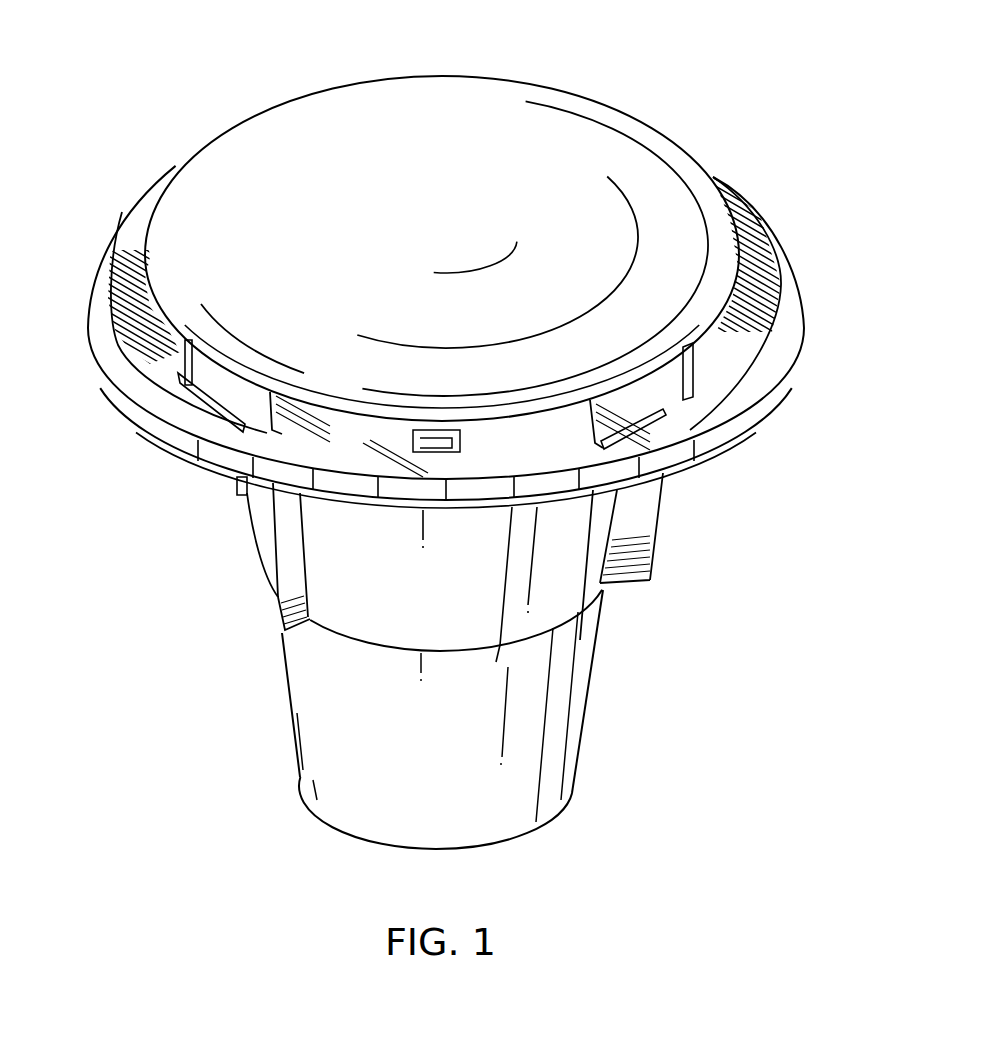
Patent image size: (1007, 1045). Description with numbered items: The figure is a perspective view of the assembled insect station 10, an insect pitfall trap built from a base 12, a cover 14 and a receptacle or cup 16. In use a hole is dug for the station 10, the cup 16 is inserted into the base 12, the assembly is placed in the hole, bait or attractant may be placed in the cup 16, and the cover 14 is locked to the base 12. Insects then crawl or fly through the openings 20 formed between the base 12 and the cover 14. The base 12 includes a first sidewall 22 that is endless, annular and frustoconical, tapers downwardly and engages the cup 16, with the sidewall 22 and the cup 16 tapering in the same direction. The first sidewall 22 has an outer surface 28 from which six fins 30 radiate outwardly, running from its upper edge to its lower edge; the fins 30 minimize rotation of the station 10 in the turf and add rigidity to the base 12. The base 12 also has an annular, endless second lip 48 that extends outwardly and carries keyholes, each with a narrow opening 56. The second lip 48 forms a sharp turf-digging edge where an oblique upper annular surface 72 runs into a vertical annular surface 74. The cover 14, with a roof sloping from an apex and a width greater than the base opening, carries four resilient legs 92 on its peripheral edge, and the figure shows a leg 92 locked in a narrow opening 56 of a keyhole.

The insect station 10 is at (619, 82).
The base 12 is at (620, 585).
The cover 14 is at (606, 249).
The cup 16 is at (428, 779).
The openings 20 is at (370, 439).
The first sidewall 22 is at (411, 594).
The outer surface 28 is at (576, 566).
The fins 30 is at (665, 505).
The second lip 48 is at (135, 255).
The narrow opening 56 is at (697, 380).
The oblique upper annular surface 72 is at (118, 350).
The vertical annular surface 74 is at (180, 428).
The legs 92 is at (640, 393).